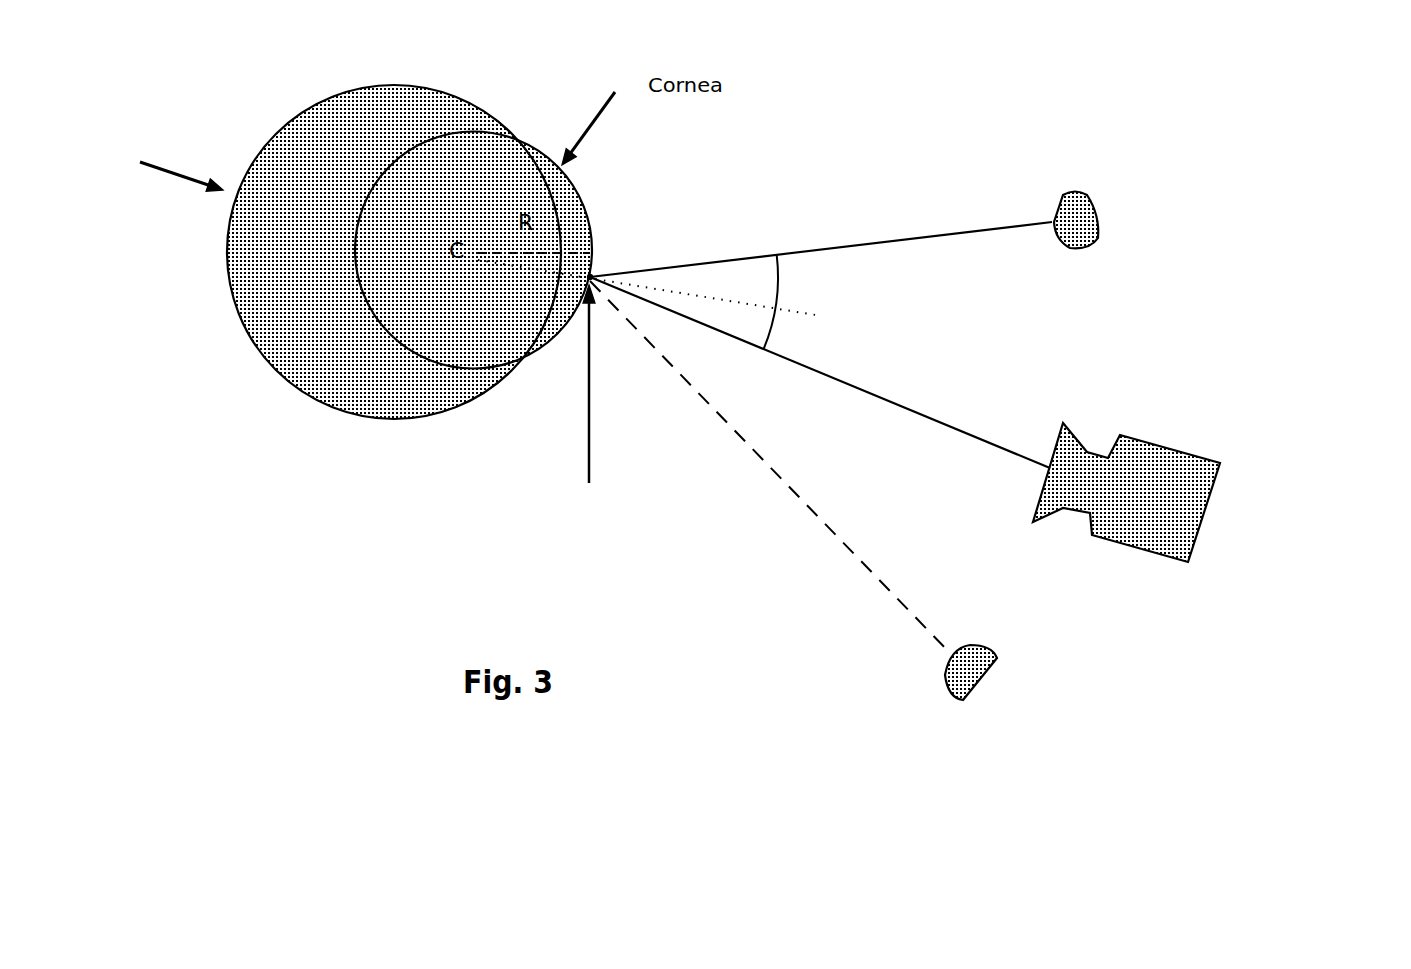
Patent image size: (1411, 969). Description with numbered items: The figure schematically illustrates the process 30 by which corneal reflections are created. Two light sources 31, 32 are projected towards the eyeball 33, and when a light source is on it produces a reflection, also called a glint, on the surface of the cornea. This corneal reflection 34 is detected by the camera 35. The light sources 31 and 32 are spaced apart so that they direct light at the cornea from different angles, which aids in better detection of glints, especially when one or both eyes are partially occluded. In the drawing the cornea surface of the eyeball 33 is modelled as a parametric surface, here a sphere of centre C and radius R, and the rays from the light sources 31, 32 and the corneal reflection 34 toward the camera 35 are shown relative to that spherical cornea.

The process of creation of corneal reflections 30 is at (996, 52).
The light source 31 is at (1175, 144).
The light source 32 is at (1070, 663).
The eyeball 33 is at (469, 84).
The corneal reflection 34 is at (608, 259).
The camera 35 is at (1187, 422).